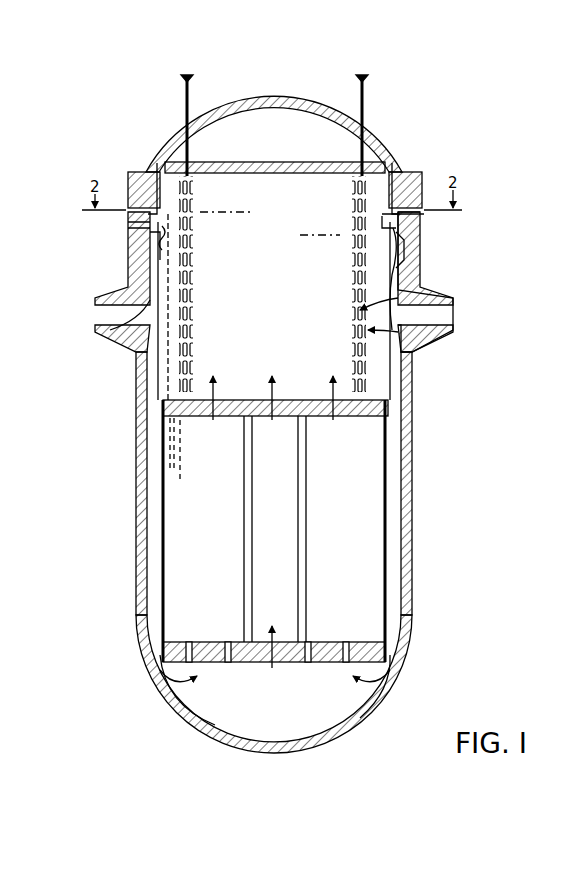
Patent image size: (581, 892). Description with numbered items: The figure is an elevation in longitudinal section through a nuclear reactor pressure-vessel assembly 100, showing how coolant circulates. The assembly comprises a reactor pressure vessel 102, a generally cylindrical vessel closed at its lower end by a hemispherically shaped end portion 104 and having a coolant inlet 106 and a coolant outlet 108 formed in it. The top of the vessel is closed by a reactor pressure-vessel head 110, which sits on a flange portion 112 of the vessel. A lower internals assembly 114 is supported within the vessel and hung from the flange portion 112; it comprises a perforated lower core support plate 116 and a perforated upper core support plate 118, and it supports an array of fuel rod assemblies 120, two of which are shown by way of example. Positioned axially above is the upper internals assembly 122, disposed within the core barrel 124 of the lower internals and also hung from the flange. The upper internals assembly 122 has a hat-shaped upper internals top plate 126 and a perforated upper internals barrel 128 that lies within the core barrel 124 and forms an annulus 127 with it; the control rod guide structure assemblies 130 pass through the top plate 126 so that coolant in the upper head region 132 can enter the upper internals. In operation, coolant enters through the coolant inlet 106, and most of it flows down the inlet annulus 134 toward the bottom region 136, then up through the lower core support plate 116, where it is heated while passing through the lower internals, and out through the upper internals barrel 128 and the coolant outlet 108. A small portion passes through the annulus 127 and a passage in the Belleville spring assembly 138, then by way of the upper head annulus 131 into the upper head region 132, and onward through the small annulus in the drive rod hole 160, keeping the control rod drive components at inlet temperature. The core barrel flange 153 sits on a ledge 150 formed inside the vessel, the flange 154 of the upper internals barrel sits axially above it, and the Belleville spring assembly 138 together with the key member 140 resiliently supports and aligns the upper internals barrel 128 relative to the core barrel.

The nuclear reactor pressure-vessel assembly 100 is at (126, 494).
The reactor pressure vessel 102 is at (412, 520).
The hemispherically shaped end portion 104 is at (350, 732).
The coolant inlet 106 is at (108, 342).
The coolant outlet 108 is at (435, 350).
The reactor pressure-vessel head 110 is at (372, 163).
The flange portion 112 is at (398, 222).
The lower internals assembly 114 is at (358, 544).
The lower core support plate 116 is at (370, 662).
The upper core support plate 118 is at (382, 420).
The fuel rod assemblies 120 is at (305, 600).
The upper internals assembly 122 is at (302, 242).
The core barrel 124 is at (160, 385).
The upper internals top plate 126 is at (182, 150).
The annulus 127 is at (158, 350).
The upper internals barrel 128 is at (152, 250).
The control rod guide structure assemblies 130 is at (194, 206).
The upper head annulus 131 is at (159, 182).
The upper head region 132 is at (284, 112).
The inlet annulus 134 is at (150, 575).
The bottom region 136 is at (218, 724).
The Belleville spring assembly 138 is at (400, 236).
The key member 140 is at (134, 238).
The ledge 150 is at (405, 256).
The core barrel flange 153 is at (176, 244).
The flange 154 is at (352, 222).
The drive rod hole 160 is at (262, 170).